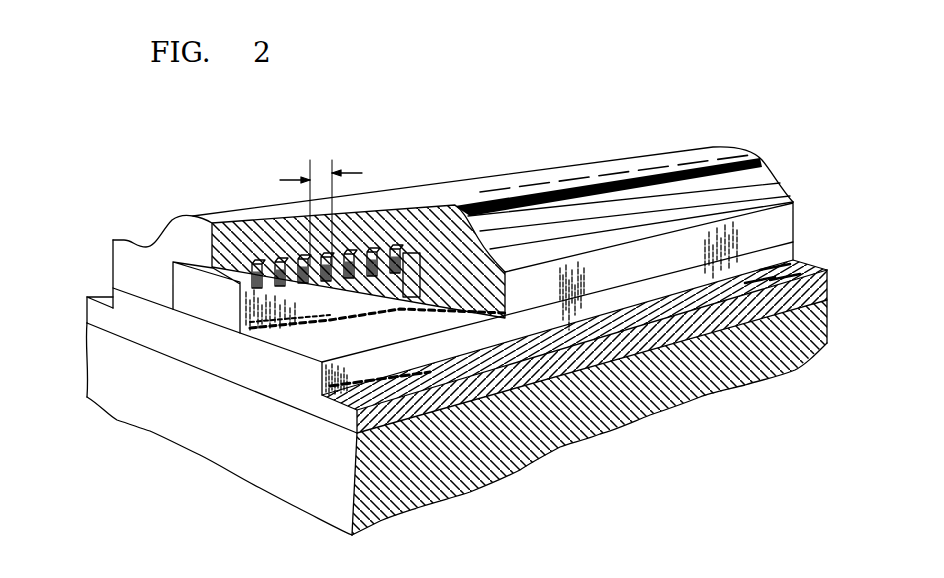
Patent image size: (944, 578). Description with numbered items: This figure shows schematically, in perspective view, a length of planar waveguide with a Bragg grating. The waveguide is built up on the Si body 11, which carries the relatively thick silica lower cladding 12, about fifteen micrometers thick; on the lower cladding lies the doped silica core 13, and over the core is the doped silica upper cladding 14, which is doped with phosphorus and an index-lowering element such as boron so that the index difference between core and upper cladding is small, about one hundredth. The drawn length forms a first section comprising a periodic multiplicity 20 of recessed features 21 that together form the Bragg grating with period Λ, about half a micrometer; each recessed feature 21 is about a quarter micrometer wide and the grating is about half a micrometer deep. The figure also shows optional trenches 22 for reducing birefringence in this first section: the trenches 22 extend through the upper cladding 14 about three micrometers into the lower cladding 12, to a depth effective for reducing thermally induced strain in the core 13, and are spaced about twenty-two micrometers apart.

The Si body 11 is at (92, 375).
The silica lower cladding 12 is at (88, 309).
The doped silica core 13 is at (220, 313).
The doped silica upper cladding 14 is at (169, 228).
The periodic multiplicity of recessed features 20 is at (249, 322).
The recessed feature 21 is at (398, 256).
The trench 22 is at (97, 296).